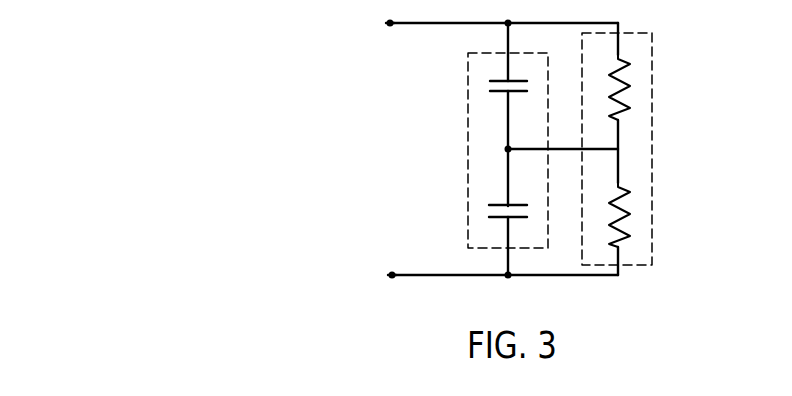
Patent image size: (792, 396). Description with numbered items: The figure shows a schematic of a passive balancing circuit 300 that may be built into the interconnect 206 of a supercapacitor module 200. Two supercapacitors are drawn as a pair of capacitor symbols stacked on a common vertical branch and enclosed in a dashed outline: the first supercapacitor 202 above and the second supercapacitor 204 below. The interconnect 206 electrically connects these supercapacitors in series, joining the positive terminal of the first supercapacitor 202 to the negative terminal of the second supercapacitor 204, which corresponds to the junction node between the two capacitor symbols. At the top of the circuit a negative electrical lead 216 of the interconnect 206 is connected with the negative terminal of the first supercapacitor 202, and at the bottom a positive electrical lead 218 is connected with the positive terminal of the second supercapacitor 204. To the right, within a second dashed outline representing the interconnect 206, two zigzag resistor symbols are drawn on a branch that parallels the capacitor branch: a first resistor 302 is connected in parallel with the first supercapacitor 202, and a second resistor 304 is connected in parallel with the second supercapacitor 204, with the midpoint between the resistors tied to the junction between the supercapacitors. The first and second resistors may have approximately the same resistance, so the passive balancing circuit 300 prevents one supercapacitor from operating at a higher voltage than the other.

The passive balancing circuit 300 is at (283, 57).
The negative electrical lead 216 is at (420, 24).
The positive electrical lead 218 is at (412, 277).
The supercapacitor module 200 is at (468, 59).
The first supercapacitor 202 is at (497, 95).
The second supercapacitor 204 is at (496, 219).
The interconnect 206 is at (652, 124).
The first resistor 302 is at (623, 57).
The second resistor 304 is at (623, 229).